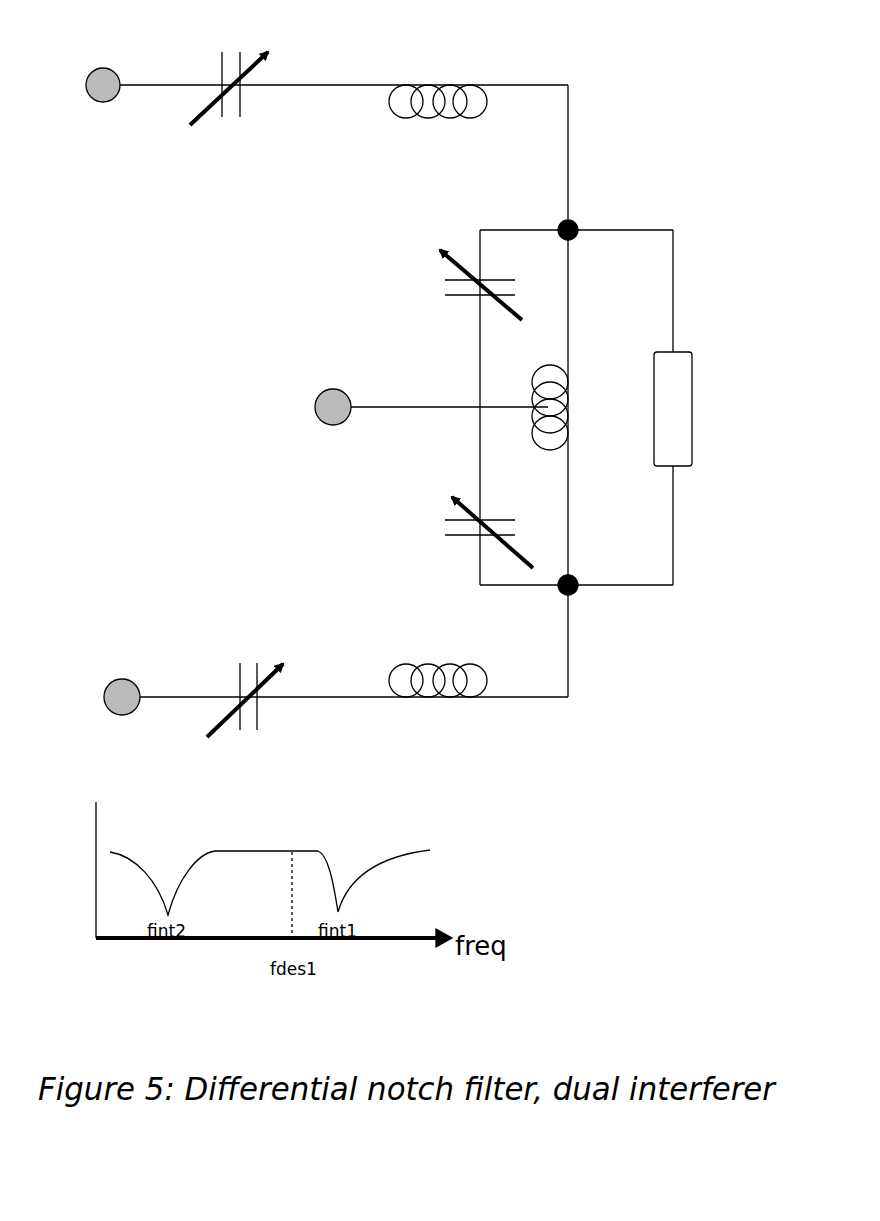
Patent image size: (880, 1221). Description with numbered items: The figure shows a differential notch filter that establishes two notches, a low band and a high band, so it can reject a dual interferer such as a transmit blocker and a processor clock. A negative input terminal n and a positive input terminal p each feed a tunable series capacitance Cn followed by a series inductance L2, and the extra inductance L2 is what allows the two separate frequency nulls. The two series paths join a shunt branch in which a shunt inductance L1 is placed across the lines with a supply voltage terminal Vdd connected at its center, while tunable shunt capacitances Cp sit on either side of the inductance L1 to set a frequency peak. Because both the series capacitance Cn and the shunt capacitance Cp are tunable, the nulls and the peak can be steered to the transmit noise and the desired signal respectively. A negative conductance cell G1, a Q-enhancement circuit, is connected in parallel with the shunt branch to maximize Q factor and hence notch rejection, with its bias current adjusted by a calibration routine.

The negative input terminal n is at (81, 86).
The positive input terminal p is at (101, 697).
The supply voltage terminal Vdd is at (390, 408).
The series capacitance Cn is at (230, 397).
The series inductance L2 is at (438, 391).
The shunt capacitance Cp is at (466, 409).
The shunt inductance L1 is at (572, 407).
The negative conductance cell G1 is at (705, 409).